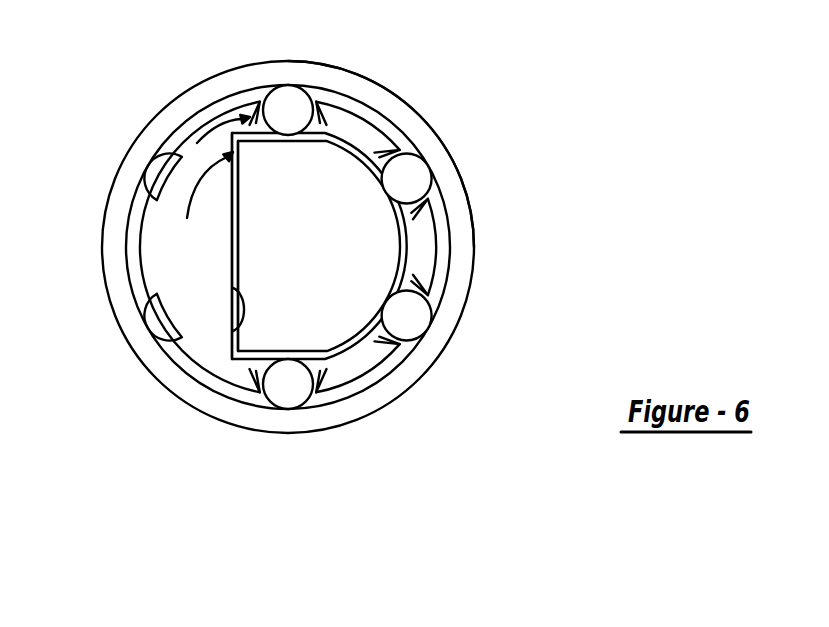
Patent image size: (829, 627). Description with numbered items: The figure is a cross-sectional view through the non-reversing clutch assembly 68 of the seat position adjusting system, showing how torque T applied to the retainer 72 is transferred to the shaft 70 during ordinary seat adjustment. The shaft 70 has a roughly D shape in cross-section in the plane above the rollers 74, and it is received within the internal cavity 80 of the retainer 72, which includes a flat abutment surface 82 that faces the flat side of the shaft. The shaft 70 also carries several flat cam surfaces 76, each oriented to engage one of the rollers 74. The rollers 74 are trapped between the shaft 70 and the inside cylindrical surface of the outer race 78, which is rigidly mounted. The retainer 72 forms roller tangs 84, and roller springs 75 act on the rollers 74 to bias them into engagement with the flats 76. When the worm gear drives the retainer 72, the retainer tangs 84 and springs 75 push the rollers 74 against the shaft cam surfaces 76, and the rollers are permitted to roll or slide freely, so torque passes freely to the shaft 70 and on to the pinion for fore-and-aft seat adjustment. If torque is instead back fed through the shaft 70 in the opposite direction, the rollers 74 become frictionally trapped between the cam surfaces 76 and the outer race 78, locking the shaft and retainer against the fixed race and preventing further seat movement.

The non-reversing clutch assembly 68 is at (131, 98).
The shaft 70 is at (338, 175).
The retainer 72 is at (449, 253).
The rollers 74 is at (297, 393).
The roller springs 75 is at (400, 205).
The flat cam surfaces 76 is at (432, 175).
The outer race 78 is at (466, 304).
The internal cavity 80 is at (237, 331).
The flat abutment surface 82 is at (233, 249).
The roller tangs 84 is at (348, 122).
The torque T is at (205, 200).